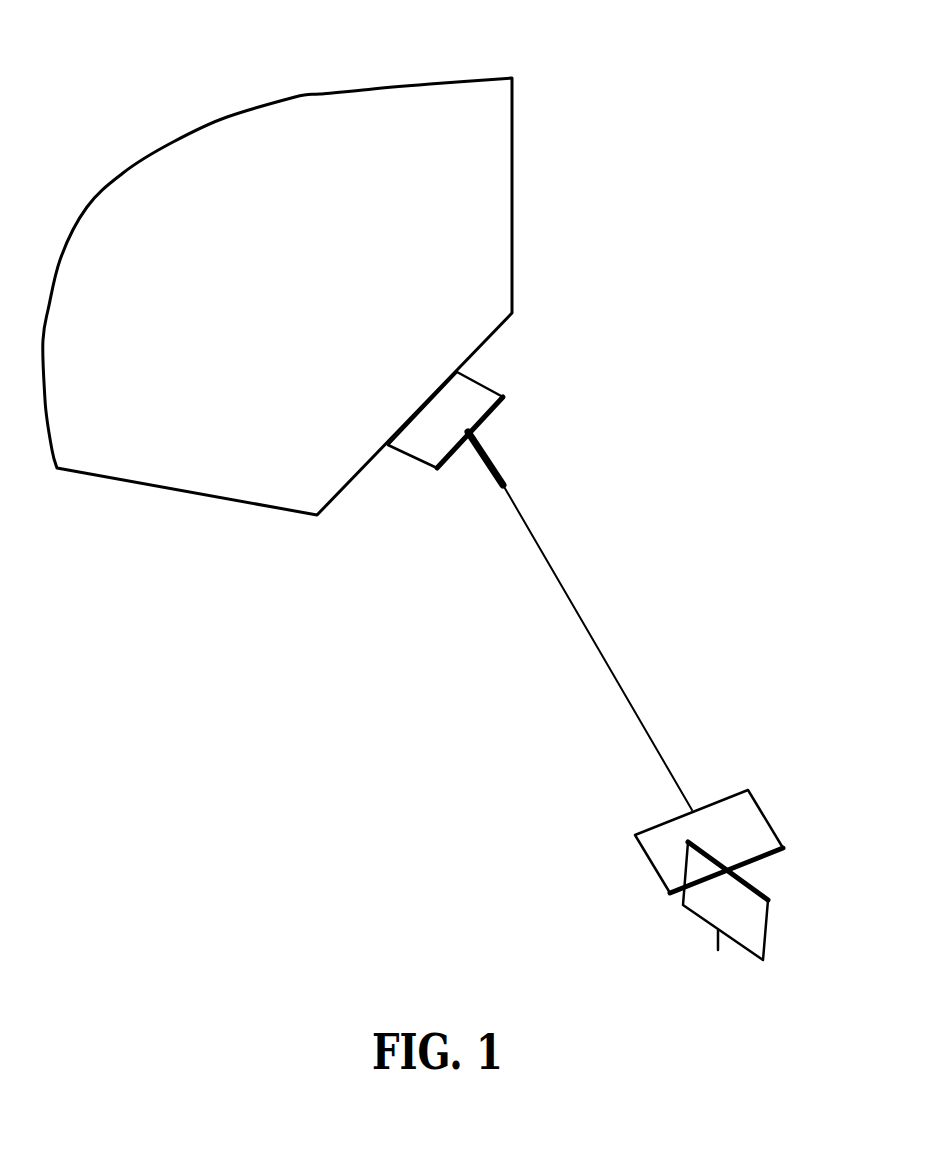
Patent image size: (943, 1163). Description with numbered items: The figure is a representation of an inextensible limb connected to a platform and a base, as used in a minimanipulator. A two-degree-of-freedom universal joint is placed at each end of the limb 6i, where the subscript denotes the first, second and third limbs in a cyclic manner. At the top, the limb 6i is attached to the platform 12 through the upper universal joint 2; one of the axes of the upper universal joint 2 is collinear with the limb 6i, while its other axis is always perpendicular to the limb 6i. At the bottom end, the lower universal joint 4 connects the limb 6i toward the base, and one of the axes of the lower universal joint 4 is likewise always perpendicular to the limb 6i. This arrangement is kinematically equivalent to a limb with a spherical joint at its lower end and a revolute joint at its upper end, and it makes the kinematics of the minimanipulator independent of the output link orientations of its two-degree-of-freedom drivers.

The platform 12 is at (295, 100).
The upper universal joint 2 is at (506, 426).
The limb 6i is at (570, 598).
The lower universal joint 4 is at (755, 870).